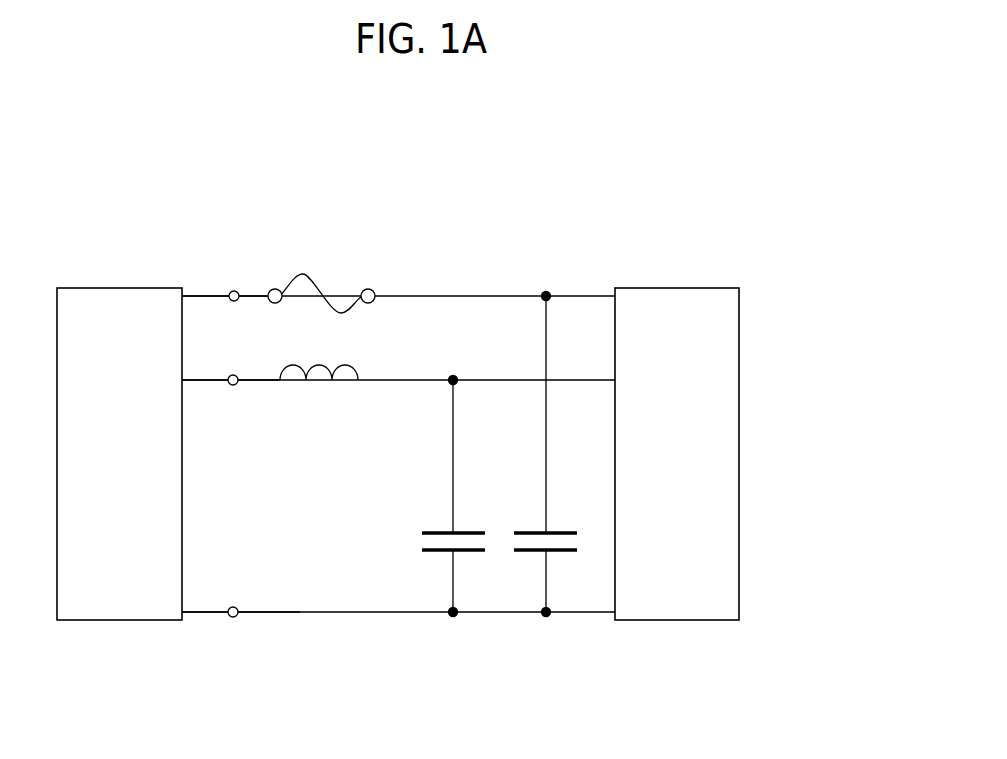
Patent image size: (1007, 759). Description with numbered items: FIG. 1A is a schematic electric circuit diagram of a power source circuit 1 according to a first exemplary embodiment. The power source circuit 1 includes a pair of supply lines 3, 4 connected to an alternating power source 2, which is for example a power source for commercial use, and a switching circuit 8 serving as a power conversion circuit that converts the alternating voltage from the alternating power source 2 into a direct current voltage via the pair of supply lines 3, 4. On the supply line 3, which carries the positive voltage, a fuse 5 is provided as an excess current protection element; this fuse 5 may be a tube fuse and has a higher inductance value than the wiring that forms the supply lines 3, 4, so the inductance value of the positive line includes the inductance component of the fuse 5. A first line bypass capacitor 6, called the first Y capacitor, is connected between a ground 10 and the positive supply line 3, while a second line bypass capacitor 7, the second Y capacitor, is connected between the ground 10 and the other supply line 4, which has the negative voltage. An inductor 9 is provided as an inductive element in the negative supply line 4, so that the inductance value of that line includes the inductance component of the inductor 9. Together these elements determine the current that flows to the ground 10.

The power source circuit 1 is at (496, 208).
The alternating power source 2 is at (114, 287).
The supply line 3 is at (198, 294).
The supply line 4 is at (203, 378).
The fuse 5 is at (290, 283).
The first line bypass capacitor 6 is at (568, 553).
The second line bypass capacitor 7 is at (474, 553).
The switching circuit 8 is at (675, 287).
The inductor 9 is at (305, 384).
The ground 10 is at (215, 620).